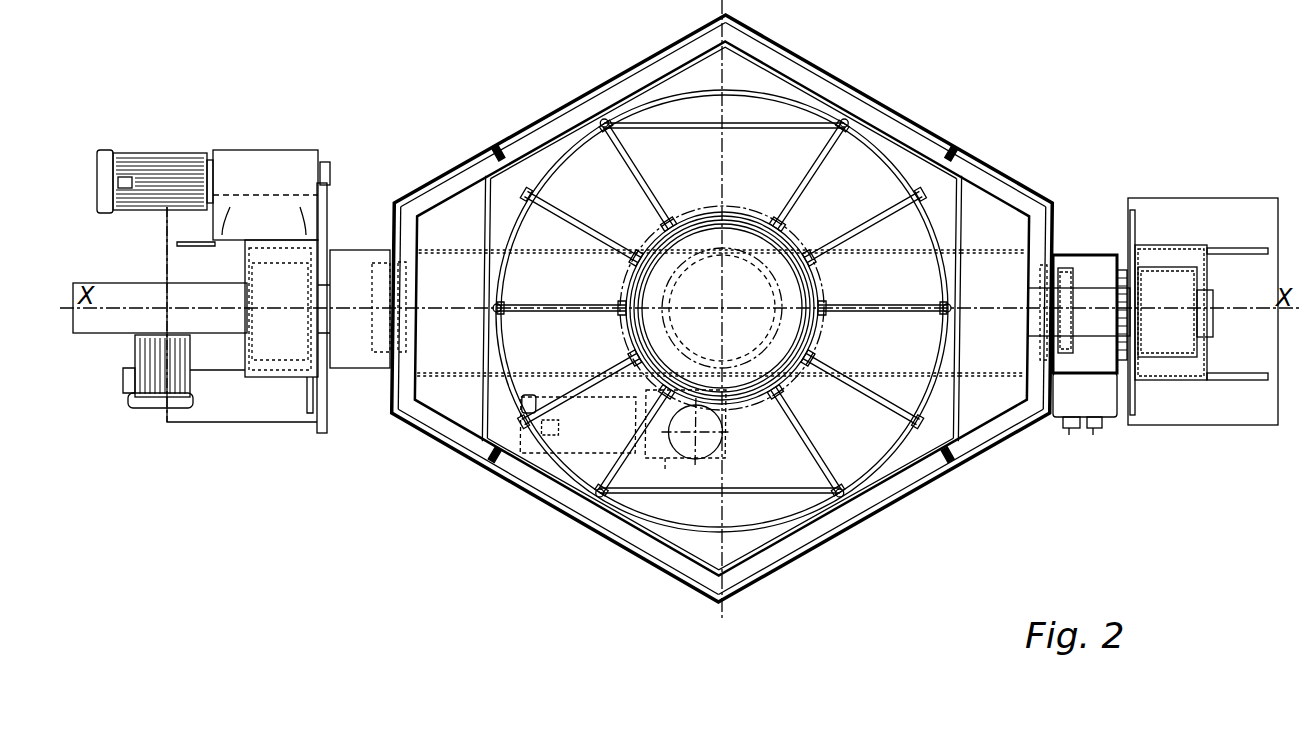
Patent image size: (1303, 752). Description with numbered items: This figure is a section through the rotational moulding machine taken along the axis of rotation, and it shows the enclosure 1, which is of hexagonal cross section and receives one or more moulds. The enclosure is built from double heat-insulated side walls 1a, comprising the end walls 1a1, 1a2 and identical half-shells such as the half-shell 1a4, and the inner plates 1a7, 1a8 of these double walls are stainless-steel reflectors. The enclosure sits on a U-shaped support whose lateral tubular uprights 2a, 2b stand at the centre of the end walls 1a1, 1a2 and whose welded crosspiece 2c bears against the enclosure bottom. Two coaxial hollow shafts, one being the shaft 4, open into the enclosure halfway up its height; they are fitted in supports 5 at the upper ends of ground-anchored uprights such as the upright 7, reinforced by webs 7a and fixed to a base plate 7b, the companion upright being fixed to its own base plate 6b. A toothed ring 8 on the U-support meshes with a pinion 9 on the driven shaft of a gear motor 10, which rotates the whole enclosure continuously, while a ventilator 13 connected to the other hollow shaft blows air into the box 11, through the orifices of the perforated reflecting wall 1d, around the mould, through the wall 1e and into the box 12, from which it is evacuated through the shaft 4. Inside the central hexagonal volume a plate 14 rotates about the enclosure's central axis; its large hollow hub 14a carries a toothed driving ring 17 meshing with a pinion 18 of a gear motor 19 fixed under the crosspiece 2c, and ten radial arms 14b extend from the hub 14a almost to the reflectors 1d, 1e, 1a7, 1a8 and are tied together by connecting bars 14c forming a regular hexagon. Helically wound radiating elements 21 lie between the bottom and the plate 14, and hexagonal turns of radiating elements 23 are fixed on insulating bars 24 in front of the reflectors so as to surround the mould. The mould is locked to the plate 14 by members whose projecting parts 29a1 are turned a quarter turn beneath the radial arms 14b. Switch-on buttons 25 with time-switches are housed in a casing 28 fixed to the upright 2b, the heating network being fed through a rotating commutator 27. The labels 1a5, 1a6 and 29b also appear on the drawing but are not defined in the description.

The enclosure 1 is at (1000, 447).
The side walls 1a is at (930, 140).
The end wall 1a1 is at (405, 386).
The end wall 1a2 is at (1040, 432).
The half-shell 1a4 is at (838, 537).
The housing shell panel 1a5 is at (422, 270).
The housing shell panel 1a6 is at (1028, 376).
The inner plate 1a7 is at (568, 118).
The inner plate 1a8 is at (905, 490).
The wall 1d is at (482, 320).
The wall 1e is at (962, 340).
The lateral tubular upright 2a is at (348, 372).
The lateral tubular upright 2b is at (1090, 256).
The crosspiece 2c is at (966, 250).
The hollow shaft 4 is at (1128, 300).
The support 5 is at (1155, 272).
The base plate 6b is at (226, 420).
The upright 7 is at (1178, 252).
The web 7a is at (1252, 255).
The base plate 7b is at (1232, 198).
The toothed ring 8 is at (328, 214).
The pinion 9 is at (332, 172).
The gear motor 10 is at (246, 150).
The box 11 is at (455, 401).
The box 12 is at (1008, 295).
The ventilator 13 is at (135, 393).
The plate 14 is at (744, 236).
The central hub 14a is at (756, 307).
The radial arm 14b is at (668, 255).
The connecting bar 14c is at (545, 250).
The ring 17 is at (735, 422).
The pinion 18 is at (730, 455).
The gear motor 19 is at (604, 457).
The radiating element 21 is at (905, 440).
The radiating element 23 is at (867, 126).
The insulating bar 24 is at (495, 150).
The switch-on button 25 is at (1093, 436).
The rotating commutator 27 is at (1118, 362).
The casing 28 is at (1103, 415).
The projecting part 29a1 is at (836, 119).
The bar 29b is at (600, 185).